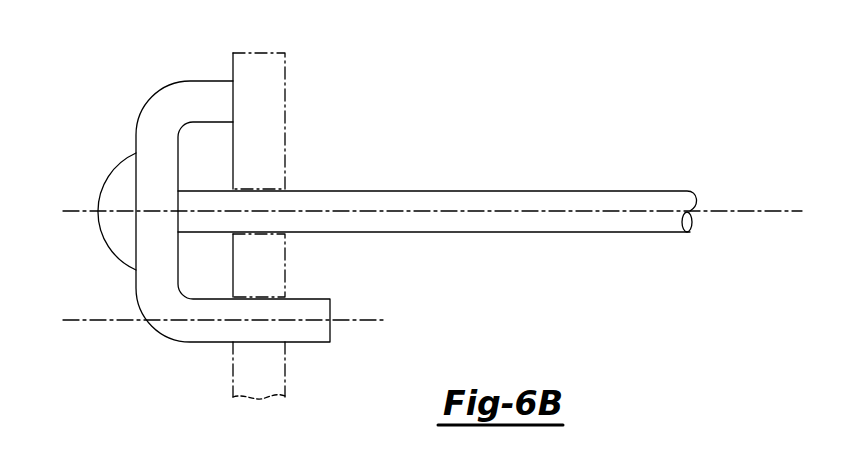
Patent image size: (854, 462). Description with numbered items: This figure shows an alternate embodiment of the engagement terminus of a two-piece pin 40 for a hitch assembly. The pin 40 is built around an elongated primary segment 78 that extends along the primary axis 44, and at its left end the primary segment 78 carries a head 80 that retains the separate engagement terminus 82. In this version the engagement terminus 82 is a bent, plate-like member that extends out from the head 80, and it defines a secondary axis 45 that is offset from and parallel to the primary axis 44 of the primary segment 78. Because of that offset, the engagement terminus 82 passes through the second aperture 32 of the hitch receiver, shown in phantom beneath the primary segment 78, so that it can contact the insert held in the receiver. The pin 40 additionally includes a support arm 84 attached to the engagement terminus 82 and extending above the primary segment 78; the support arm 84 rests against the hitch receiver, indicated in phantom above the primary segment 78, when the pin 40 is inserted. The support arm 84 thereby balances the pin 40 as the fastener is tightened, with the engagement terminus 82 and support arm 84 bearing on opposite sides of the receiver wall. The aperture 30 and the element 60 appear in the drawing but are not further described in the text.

The upper mounting surface / hole 30 is at (287, 188).
The second aperture 32 is at (287, 298).
The pin 40 is at (550, 160).
The primary axis 44 is at (745, 211).
The secondary axis 45 is at (363, 322).
The fastener block 60 is at (280, 73).
The primary segment 78 is at (448, 204).
The head 80 is at (113, 231).
The engagement terminus 82 is at (190, 325).
The support arm 84 is at (198, 97).